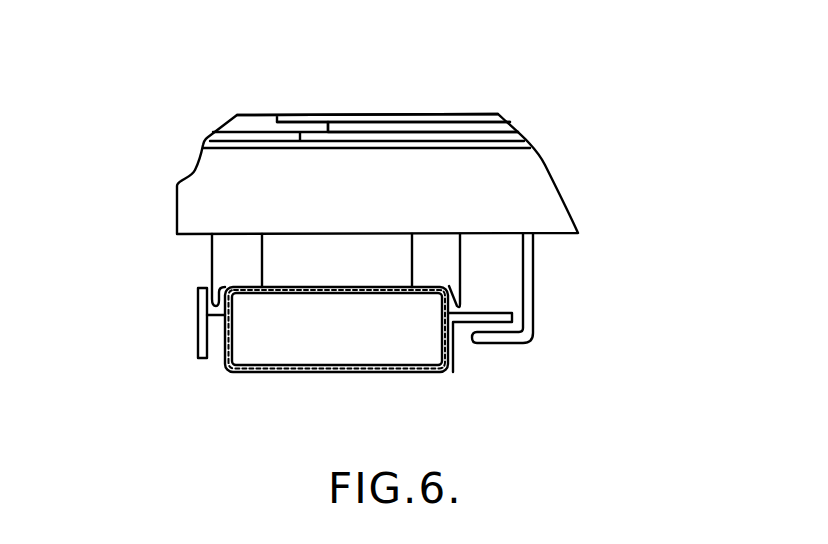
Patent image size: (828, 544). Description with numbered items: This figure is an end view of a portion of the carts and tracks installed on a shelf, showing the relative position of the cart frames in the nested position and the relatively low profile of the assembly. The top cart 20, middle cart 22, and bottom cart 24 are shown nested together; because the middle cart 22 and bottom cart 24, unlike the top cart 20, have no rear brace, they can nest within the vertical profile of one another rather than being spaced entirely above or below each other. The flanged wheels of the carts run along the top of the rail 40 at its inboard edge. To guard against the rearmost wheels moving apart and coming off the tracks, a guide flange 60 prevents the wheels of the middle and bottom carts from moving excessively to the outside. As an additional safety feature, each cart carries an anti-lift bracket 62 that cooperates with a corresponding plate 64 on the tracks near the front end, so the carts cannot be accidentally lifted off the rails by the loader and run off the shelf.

The top cart 20 is at (427, 114).
The middle cart 22 is at (515, 128).
The bottom cart 24 is at (543, 172).
The rail 40 is at (393, 357).
The guide flange 60 is at (198, 302).
The anti-lift bracket 62 is at (537, 317).
The plate 64 is at (497, 315).